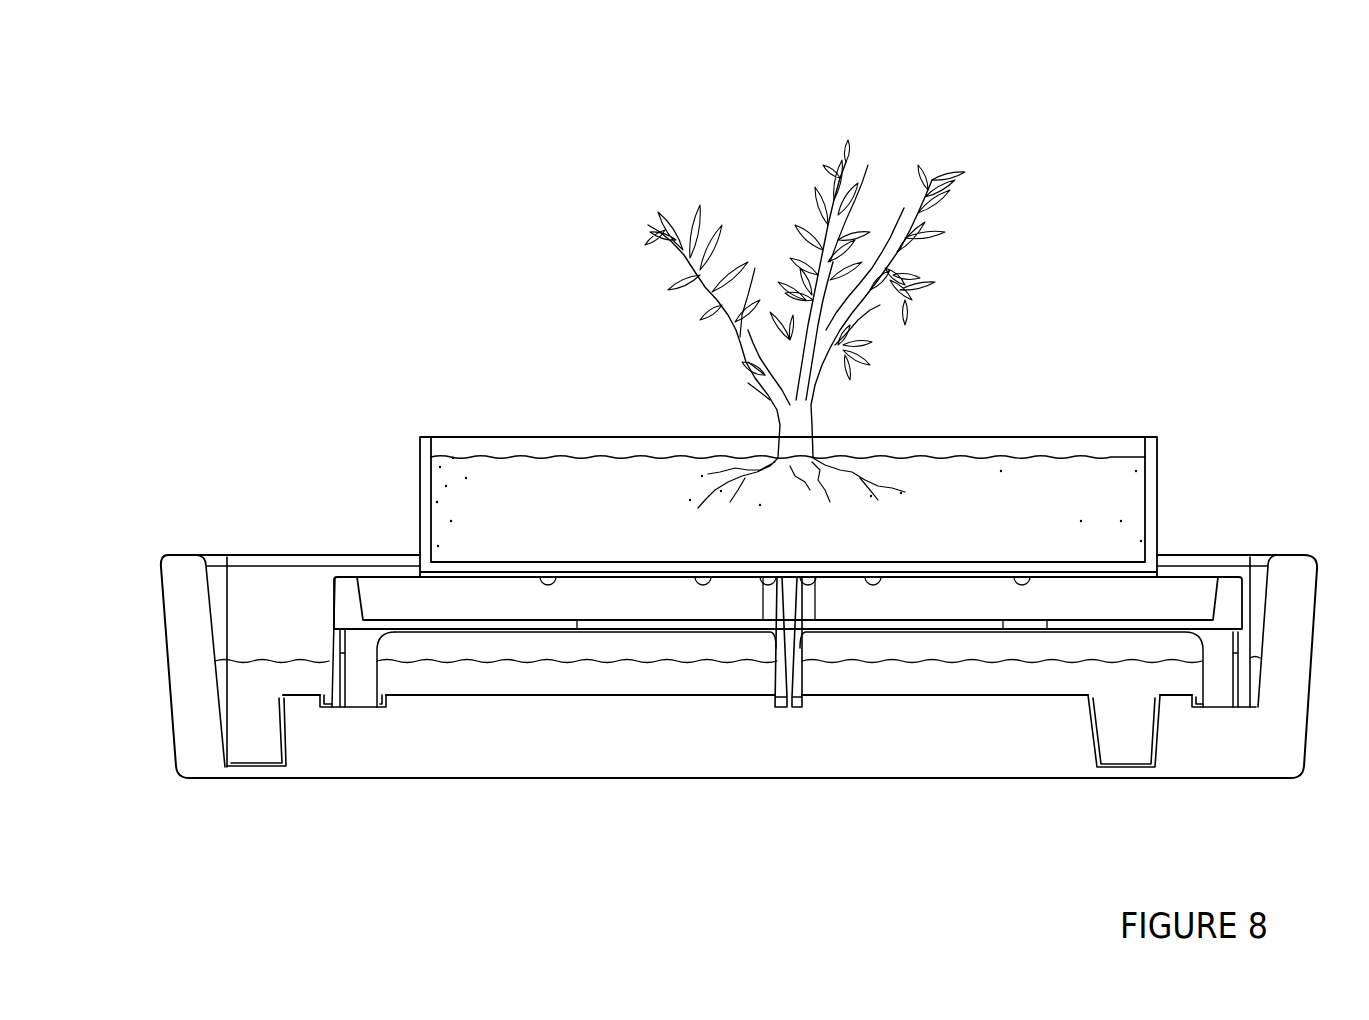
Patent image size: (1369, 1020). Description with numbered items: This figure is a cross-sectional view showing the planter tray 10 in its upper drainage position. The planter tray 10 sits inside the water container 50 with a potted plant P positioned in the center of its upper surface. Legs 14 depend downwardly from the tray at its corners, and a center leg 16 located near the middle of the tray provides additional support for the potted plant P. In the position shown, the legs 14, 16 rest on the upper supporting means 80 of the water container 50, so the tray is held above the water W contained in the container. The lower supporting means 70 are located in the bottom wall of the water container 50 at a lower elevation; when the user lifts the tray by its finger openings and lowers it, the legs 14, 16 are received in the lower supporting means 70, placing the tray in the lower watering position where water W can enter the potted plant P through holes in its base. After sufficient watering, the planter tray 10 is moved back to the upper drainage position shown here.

The planter tray 10 is at (1158, 593).
The legs 14 is at (358, 672).
The center leg 16 is at (788, 650).
The water container 50 is at (1183, 741).
The lower supporting means 70 is at (252, 768).
The upper supporting means 80 is at (354, 708).
The potted plant P is at (897, 121).
The water W is at (505, 680).